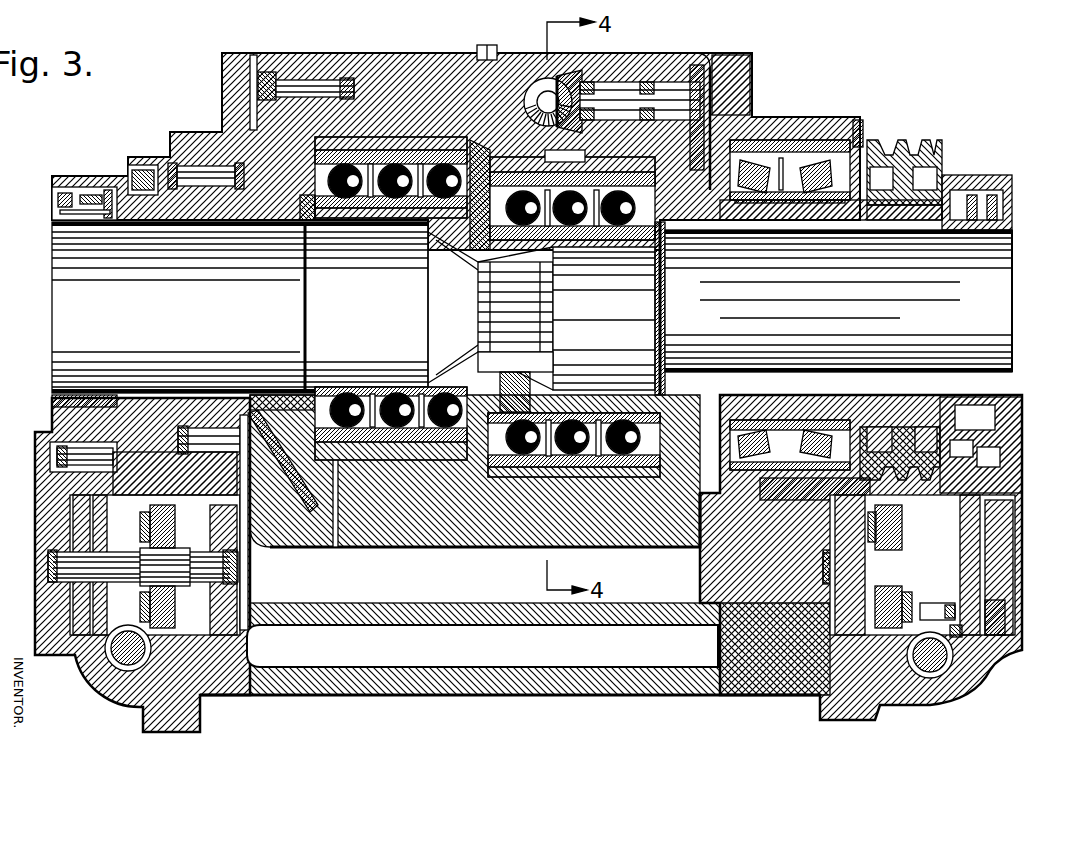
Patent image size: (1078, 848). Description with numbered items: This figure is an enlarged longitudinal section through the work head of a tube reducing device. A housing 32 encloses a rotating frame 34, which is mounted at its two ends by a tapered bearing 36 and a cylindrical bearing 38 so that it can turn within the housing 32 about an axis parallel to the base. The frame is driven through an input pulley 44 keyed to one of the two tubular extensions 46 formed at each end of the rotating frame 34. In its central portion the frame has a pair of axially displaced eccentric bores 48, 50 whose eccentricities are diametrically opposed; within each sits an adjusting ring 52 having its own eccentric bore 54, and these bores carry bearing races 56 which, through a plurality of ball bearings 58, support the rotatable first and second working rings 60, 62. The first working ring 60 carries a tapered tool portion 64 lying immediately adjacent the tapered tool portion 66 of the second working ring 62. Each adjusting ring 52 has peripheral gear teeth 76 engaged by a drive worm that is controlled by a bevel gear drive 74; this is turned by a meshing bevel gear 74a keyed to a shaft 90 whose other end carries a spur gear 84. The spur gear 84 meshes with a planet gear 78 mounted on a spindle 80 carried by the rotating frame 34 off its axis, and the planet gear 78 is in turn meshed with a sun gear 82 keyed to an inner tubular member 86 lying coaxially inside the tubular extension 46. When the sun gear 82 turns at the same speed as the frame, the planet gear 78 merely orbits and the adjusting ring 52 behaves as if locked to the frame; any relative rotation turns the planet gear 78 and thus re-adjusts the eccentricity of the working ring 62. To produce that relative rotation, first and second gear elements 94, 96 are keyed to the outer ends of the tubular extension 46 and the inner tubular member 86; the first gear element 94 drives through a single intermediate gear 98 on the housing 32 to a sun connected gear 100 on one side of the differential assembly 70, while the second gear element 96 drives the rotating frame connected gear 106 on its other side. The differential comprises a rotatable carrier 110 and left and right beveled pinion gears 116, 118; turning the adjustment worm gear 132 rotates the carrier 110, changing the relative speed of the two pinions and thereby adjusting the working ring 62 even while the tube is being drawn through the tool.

The housing 32 is at (745, 697).
The rotating frame 34 is at (470, 548).
The tapered bearing 36 is at (805, 153).
The cylindrical bearing 38 is at (207, 163).
The input pulley 44 is at (902, 140).
The tubular extension 46 is at (143, 208).
The eccentric bore 48 is at (520, 157).
The eccentric bore 50 is at (345, 137).
The adjusting ring 52 is at (375, 137).
The eccentric bore 54 is at (382, 432).
The bearing race 56 is at (400, 420).
The ball bearing 58 is at (445, 445).
The first working ring 60 is at (455, 262).
The second working ring 62 is at (600, 255).
The tapered tool portion 64 is at (462, 300).
The tapered tool portion 66 is at (515, 355).
The differential assembly 70 is at (36, 508).
The bevel gear drive 74 is at (537, 107).
The meshing bevel gear 74a is at (560, 85).
The peripheral gear teeth 76 is at (562, 160).
The planet gear 78 is at (722, 108).
The spindle 80 is at (733, 143).
The sun gear 82 is at (700, 245).
The spur gear 84 is at (690, 77).
The inner tubular member 86 is at (903, 233).
The shaft 90 is at (633, 90).
The first gear element 94 is at (967, 207).
The second gear element 96 is at (997, 213).
The intermediate gear 98 is at (973, 433).
The sun connected gear 100 is at (960, 637).
The rotating frame connected gear 106 is at (987, 637).
The rotatable carrier 110 is at (853, 613).
The left beveled pinion gear 116 is at (827, 582).
The right beveled pinion gear 118 is at (897, 593).
The adjustment worm gear 132 is at (932, 660).